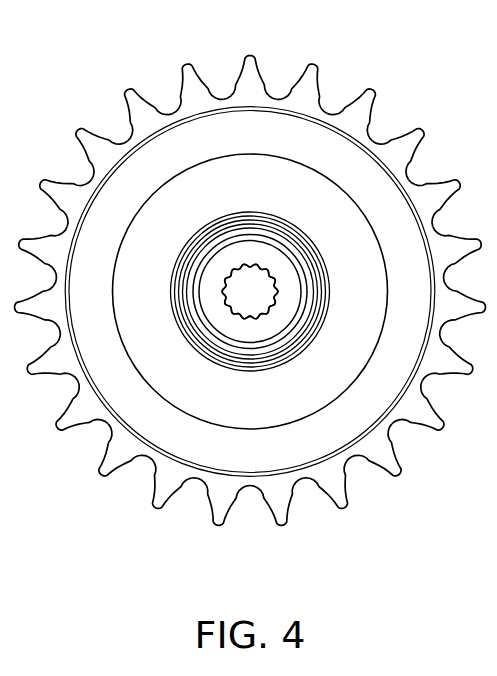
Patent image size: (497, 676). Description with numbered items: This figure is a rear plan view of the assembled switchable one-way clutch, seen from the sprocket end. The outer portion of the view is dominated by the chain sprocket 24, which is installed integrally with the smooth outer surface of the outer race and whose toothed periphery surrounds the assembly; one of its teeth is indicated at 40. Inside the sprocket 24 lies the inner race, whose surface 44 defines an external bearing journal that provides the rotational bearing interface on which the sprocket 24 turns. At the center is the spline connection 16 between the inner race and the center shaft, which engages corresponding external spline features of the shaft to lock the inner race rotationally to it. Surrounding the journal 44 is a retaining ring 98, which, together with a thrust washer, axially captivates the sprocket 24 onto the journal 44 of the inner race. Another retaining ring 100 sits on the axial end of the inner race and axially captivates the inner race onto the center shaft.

The chain sprocket 24 is at (375, 173).
The sprocket tooth 40 is at (247, 65).
The retaining ring 98 is at (257, 232).
The external bearing journal 44 is at (285, 317).
The spline connection 16 is at (278, 287).
The retaining ring 100 is at (242, 318).